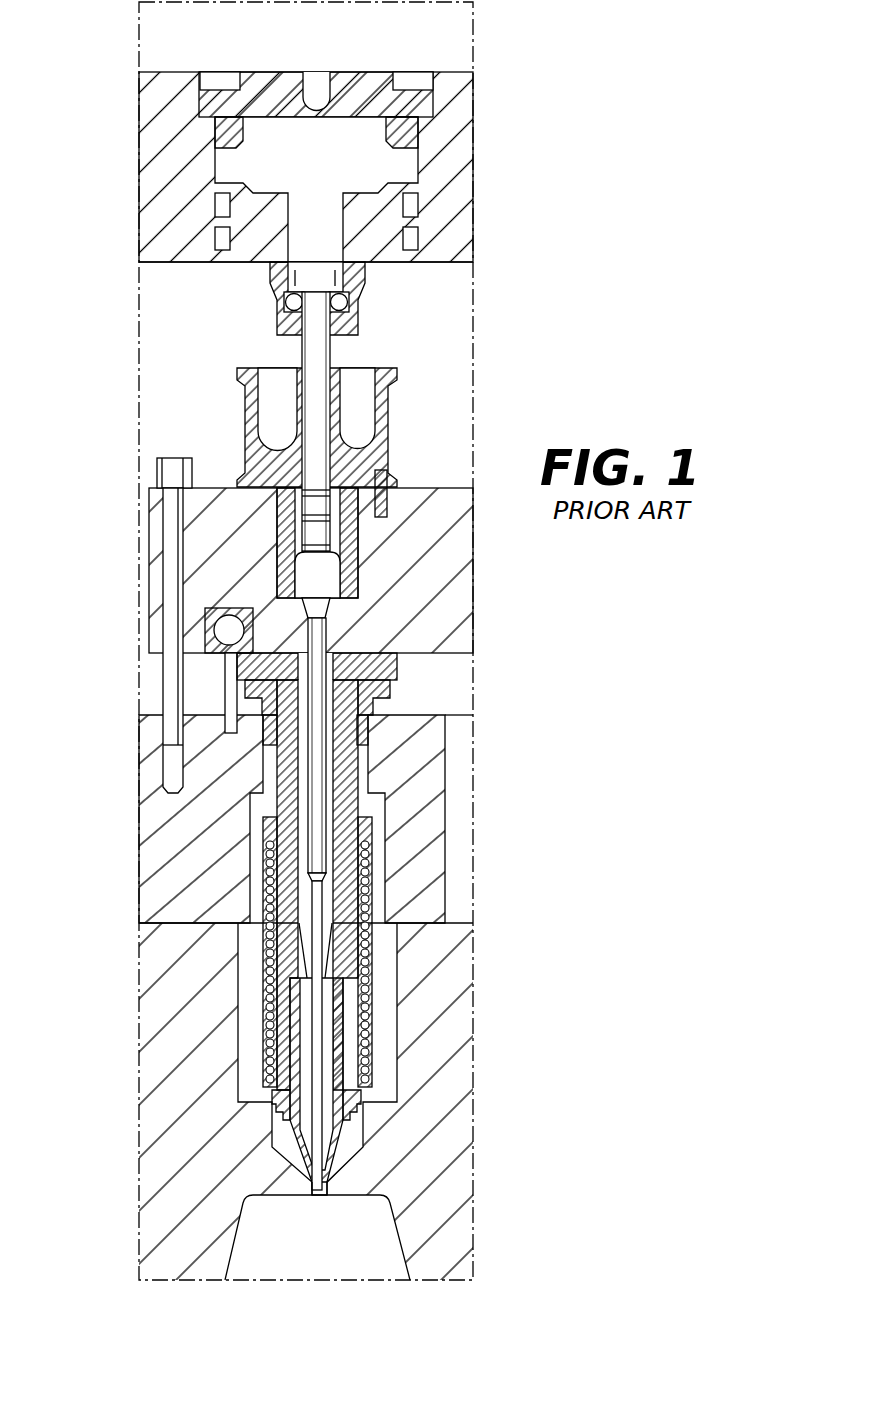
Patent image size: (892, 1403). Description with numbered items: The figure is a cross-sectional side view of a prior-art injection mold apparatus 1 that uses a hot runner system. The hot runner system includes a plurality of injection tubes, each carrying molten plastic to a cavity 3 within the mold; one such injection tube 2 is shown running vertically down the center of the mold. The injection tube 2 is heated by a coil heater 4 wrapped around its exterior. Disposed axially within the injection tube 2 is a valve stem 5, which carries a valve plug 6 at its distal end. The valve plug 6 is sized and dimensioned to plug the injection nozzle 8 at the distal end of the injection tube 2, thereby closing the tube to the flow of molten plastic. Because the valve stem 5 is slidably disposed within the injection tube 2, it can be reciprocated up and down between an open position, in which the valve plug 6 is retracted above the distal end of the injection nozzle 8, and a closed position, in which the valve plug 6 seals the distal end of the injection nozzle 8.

The injection mold apparatus 1 is at (507, 155).
The injection tube 2 is at (366, 808).
The cavity 3 is at (377, 1255).
The coil heater 4 is at (377, 958).
The valve stem 5 is at (334, 635).
The valve plug 6 is at (326, 1186).
The injection nozzle 8 is at (305, 1192).